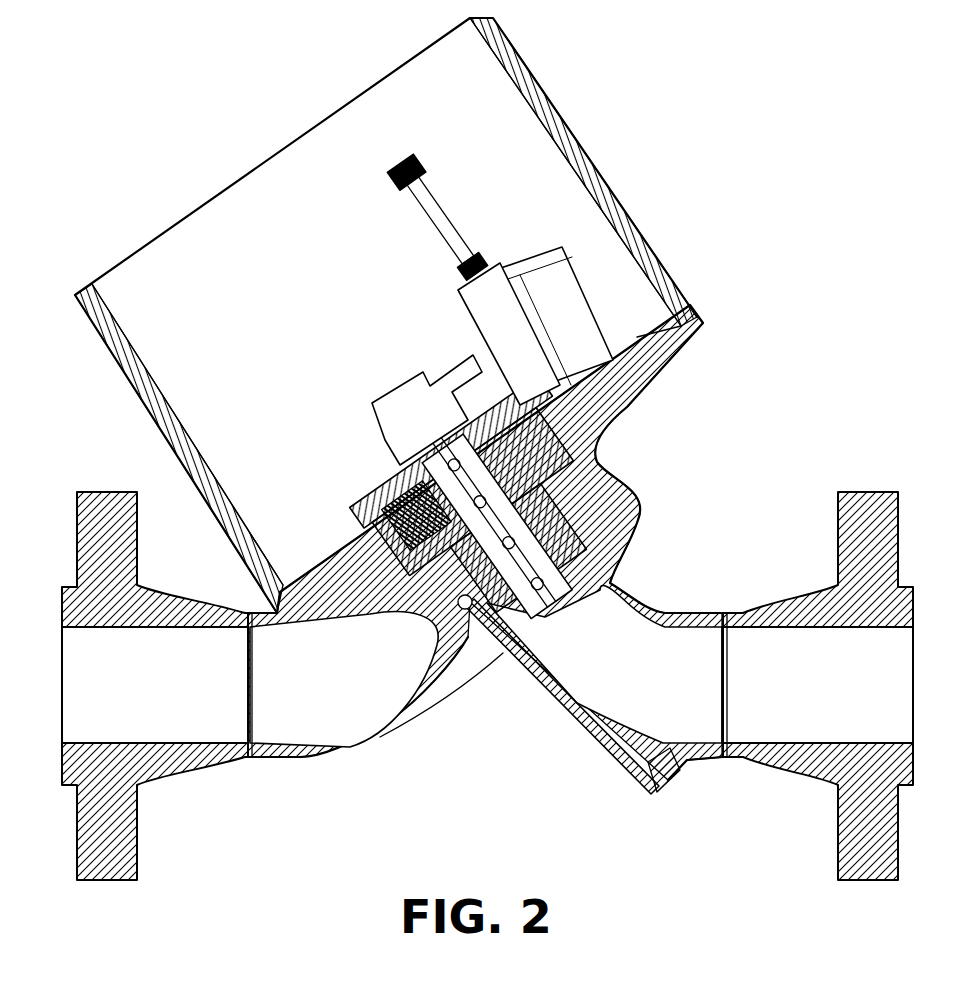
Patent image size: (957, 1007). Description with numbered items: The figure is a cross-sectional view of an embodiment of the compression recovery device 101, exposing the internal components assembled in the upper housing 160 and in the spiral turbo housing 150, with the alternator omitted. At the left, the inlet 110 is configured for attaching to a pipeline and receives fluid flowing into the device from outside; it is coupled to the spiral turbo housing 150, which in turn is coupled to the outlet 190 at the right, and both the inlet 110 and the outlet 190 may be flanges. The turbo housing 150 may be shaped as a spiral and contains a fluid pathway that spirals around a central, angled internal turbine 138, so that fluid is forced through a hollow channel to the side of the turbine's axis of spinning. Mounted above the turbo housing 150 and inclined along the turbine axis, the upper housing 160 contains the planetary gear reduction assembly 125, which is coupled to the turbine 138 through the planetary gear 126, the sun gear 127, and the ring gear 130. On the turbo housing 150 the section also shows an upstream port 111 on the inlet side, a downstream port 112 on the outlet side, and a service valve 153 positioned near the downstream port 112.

The compression recovery device 101 is at (735, 185).
The inlet 110 is at (183, 765).
The upstream port 111 is at (318, 692).
The downstream port 112 is at (663, 685).
The planetary gear reduction assembly 125 is at (487, 392).
The planetary gear 126 is at (545, 445).
The sun gear 127 is at (487, 477).
The ring gear 130 is at (598, 432).
The turbine 138 is at (590, 545).
The spiral turbo housing 150 is at (490, 568).
The service valve 153 is at (660, 775).
The upper housing 160 is at (557, 107).
The outlet 190 is at (810, 772).